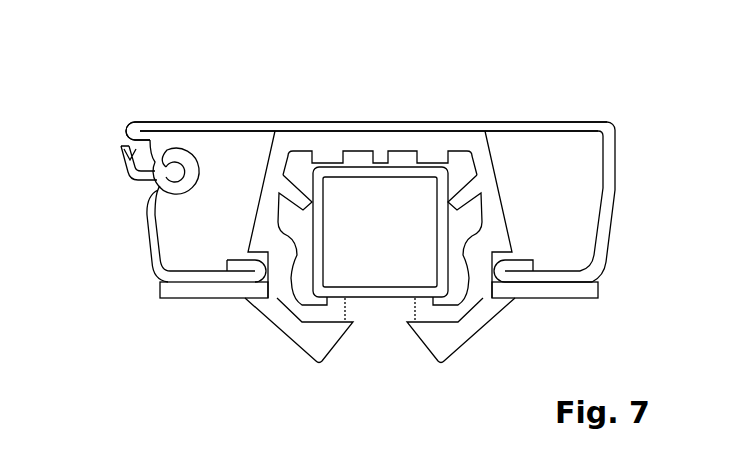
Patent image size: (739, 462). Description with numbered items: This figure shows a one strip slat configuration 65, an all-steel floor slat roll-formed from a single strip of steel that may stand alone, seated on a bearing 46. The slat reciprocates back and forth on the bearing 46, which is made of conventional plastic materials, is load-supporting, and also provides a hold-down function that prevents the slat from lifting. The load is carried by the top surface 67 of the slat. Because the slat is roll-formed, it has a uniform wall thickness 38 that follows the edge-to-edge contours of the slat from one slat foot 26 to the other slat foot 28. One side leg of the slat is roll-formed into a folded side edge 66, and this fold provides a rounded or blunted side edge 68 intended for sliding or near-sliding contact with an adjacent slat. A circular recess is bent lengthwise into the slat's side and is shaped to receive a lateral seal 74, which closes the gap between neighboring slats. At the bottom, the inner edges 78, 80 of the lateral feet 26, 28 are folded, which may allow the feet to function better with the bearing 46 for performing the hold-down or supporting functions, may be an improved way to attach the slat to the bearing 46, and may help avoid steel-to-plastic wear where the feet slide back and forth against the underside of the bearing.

The slat foot 26 is at (205, 284).
The slat foot 28 is at (572, 279).
The uniform wall thickness 38 is at (571, 116).
The bearing 46 is at (433, 136).
The one strip slat configuration 65 is at (353, 105).
The folded side edge 66 is at (173, 143).
The top surface 67 is at (227, 123).
The rounded side edge 68 is at (128, 127).
The lateral seal 74 is at (158, 178).
The inner edge of lateral foot 78 is at (248, 287).
The inner edge of lateral foot 80 is at (518, 279).